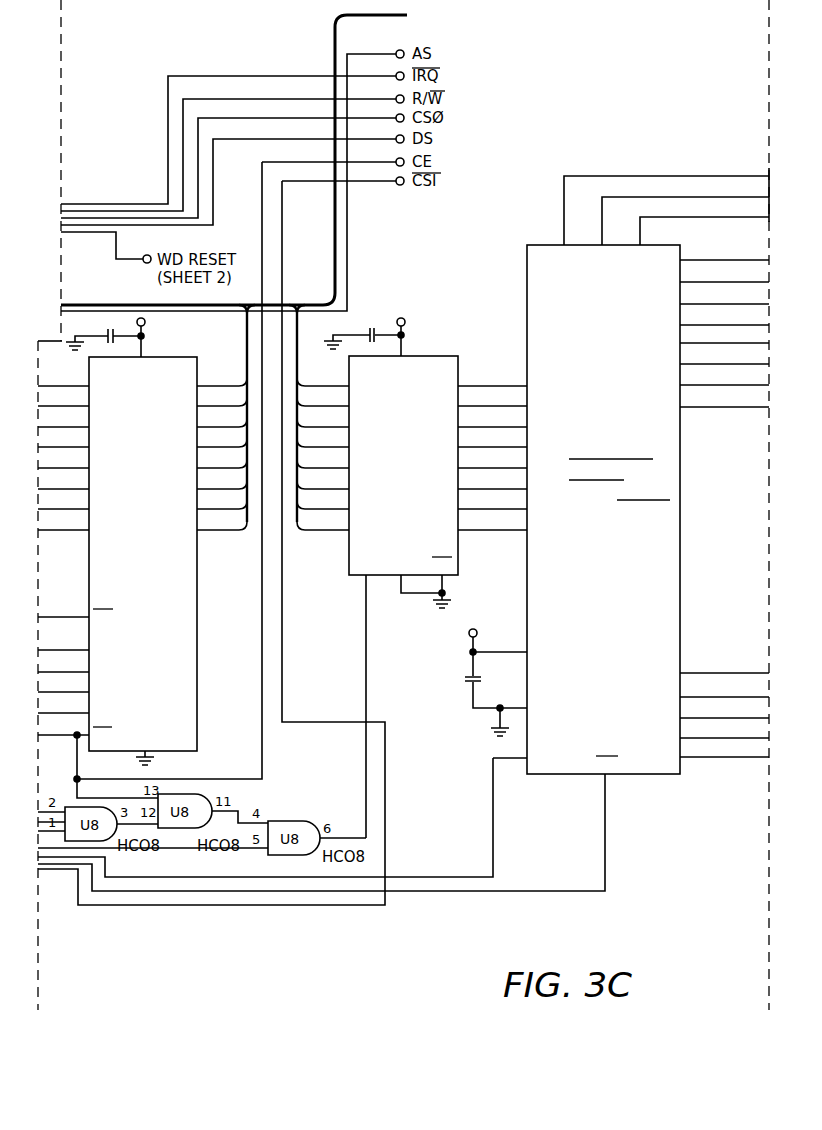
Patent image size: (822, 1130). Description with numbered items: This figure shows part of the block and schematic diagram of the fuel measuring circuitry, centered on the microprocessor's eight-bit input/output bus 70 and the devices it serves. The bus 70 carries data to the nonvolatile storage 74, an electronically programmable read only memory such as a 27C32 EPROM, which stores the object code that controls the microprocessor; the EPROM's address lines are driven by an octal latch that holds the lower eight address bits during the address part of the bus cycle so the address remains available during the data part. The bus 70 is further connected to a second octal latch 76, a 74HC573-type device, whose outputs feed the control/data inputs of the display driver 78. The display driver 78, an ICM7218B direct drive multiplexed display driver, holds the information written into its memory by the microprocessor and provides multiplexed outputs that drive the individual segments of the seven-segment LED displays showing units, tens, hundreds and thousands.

The input/output bus 70 is at (125, 304).
The nonvolatile storage 74 is at (166, 695).
The second octal latch 76 is at (412, 517).
The display driver 78 is at (625, 689).